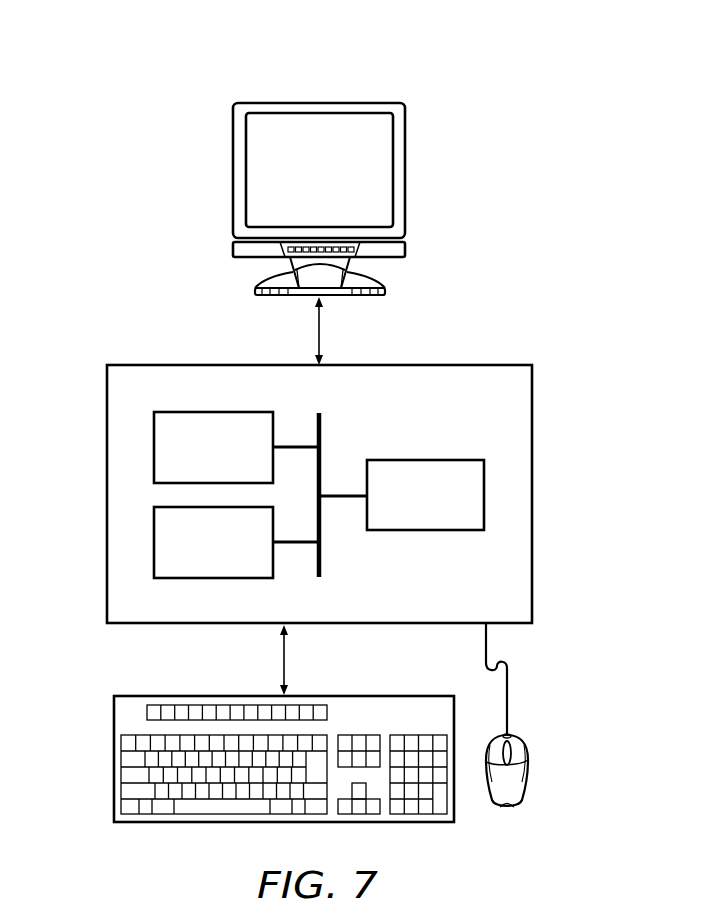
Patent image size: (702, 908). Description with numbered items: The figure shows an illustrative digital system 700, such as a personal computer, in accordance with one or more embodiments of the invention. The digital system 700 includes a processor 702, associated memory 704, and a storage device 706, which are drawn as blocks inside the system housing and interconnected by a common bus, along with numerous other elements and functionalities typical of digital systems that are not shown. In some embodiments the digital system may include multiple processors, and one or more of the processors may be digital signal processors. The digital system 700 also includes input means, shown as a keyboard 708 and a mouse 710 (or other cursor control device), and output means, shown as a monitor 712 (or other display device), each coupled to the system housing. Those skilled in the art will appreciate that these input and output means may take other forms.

The digital system 700 is at (477, 76).
The processor 702 is at (447, 509).
The memory 704 is at (235, 463).
The storage device 706 is at (235, 558).
The keyboard 708 is at (113, 757).
The mouse 710 is at (528, 770).
The monitor 712 is at (233, 170).